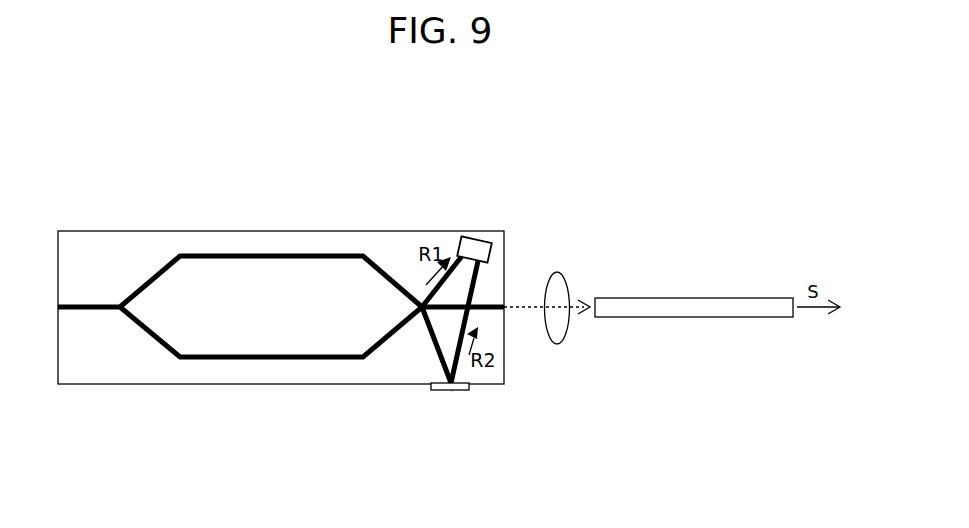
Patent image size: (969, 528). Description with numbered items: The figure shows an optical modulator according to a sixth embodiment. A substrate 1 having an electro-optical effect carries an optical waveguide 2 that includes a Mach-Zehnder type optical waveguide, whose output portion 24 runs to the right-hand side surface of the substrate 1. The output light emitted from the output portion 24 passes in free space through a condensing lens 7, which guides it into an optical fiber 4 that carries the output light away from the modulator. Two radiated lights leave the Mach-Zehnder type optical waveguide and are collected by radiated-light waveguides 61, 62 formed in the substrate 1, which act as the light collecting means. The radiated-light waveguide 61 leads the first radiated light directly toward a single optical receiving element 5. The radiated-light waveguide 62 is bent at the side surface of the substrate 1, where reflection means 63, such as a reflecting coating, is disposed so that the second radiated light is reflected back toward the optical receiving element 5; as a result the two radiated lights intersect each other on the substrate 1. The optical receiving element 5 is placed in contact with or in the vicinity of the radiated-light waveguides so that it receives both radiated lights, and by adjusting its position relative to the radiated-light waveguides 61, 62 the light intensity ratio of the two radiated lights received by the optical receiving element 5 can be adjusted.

The substrate 1 is at (182, 243).
The optical waveguide 2 is at (273, 250).
The Mach-Zehnder type optical waveguide 24 is at (487, 309).
The radiated-light waveguide 61 is at (429, 292).
The radiated-light waveguide 62 is at (433, 342).
The optical receiving element 5 is at (473, 243).
The reflection means 63 is at (445, 390).
The condensing lens 7 is at (558, 325).
The optical fiber 4 is at (640, 306).